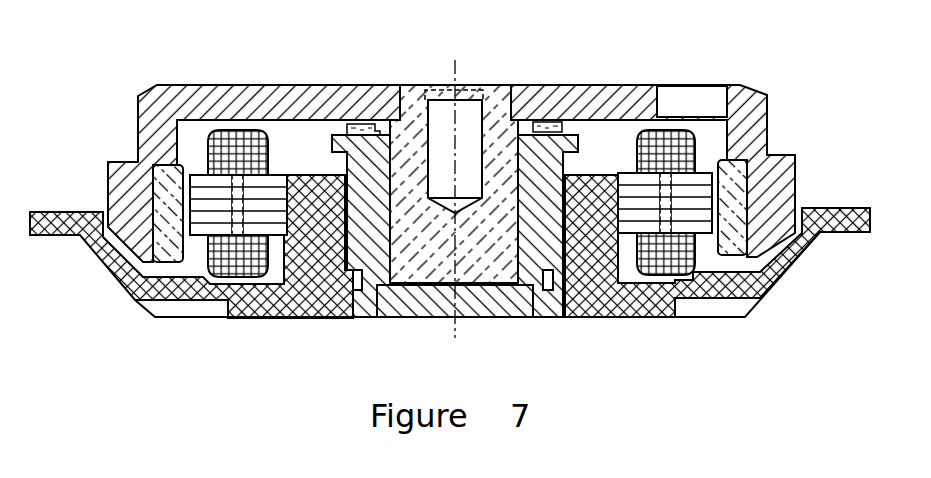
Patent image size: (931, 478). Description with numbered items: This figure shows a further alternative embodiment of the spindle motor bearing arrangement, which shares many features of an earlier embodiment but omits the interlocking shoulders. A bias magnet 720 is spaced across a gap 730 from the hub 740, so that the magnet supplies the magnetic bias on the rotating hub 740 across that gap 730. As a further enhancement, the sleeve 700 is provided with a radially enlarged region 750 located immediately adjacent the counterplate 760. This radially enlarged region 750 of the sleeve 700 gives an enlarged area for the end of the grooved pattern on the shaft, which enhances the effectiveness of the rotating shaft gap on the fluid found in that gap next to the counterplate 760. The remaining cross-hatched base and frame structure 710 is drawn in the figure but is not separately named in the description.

The sleeve 700 is at (472, 268).
The base frame 710 is at (585, 262).
The bias magnet 720 is at (563, 117).
The gap 730 is at (542, 124).
The hub 740 is at (643, 97).
The radially enlarged region 750 is at (356, 290).
The counterplate 760 is at (423, 316).